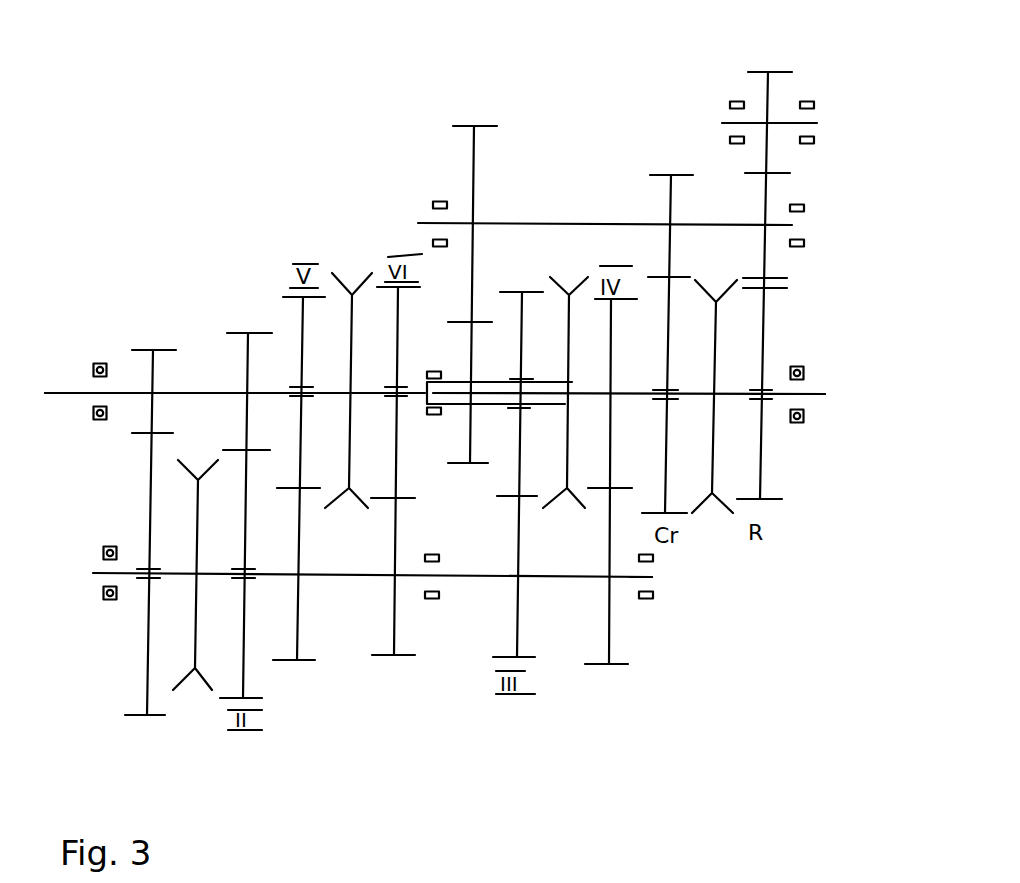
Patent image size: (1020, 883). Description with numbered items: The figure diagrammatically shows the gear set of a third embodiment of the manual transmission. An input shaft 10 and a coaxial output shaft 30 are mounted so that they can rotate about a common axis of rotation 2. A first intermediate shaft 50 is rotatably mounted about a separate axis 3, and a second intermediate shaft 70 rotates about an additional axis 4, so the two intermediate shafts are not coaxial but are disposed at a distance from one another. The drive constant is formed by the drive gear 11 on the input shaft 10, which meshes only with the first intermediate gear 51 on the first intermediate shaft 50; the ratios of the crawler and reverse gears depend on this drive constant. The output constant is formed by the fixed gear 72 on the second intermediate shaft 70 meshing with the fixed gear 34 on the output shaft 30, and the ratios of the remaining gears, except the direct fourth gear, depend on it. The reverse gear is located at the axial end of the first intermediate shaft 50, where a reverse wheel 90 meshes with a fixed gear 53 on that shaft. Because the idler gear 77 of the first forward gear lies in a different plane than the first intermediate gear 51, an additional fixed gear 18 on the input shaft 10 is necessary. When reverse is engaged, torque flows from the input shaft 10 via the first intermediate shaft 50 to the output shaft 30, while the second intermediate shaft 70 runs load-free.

The axis of rotation 2 is at (80, 400).
The axis 3 is at (418, 218).
The additional axis 4 is at (132, 578).
The input shaft 10 is at (62, 390).
The drive gear 11 is at (465, 463).
The fixed gear 18 is at (147, 340).
The output shaft 30 is at (817, 400).
The fixed gear 34 is at (620, 300).
The first intermediate shaft 50 is at (795, 225).
The first intermediate gear 51 is at (470, 122).
The fixed gear 53 is at (780, 173).
The second intermediate shaft 70 is at (652, 577).
The fixed gear 72 is at (611, 670).
The idler gear 77 is at (162, 718).
The reverse wheel 90 is at (770, 72).